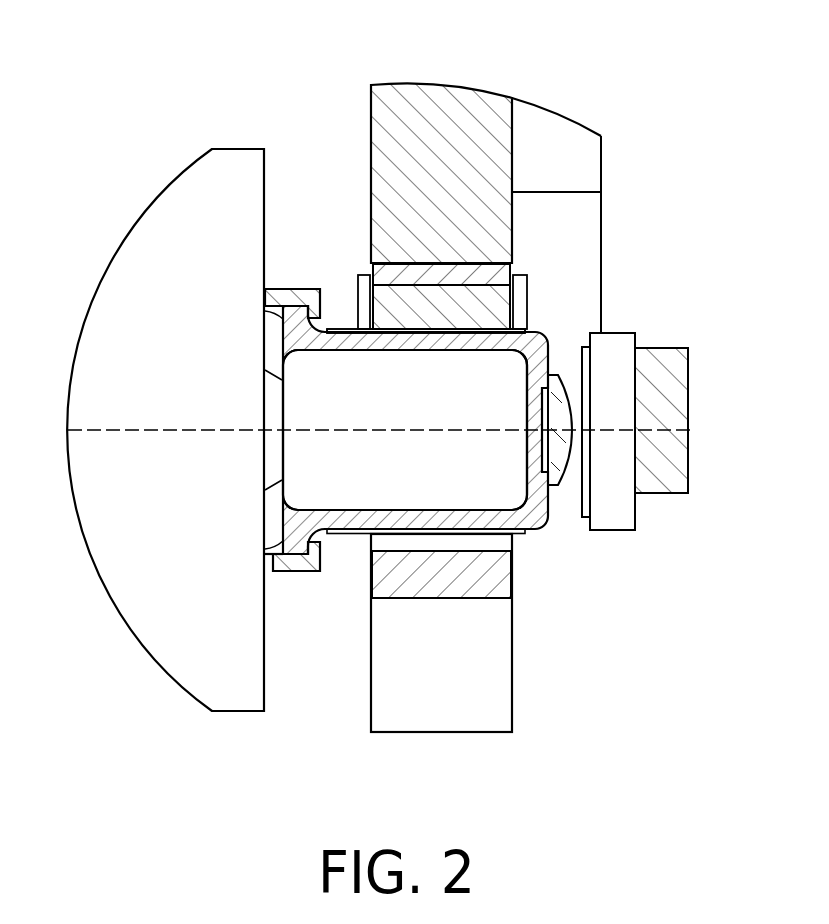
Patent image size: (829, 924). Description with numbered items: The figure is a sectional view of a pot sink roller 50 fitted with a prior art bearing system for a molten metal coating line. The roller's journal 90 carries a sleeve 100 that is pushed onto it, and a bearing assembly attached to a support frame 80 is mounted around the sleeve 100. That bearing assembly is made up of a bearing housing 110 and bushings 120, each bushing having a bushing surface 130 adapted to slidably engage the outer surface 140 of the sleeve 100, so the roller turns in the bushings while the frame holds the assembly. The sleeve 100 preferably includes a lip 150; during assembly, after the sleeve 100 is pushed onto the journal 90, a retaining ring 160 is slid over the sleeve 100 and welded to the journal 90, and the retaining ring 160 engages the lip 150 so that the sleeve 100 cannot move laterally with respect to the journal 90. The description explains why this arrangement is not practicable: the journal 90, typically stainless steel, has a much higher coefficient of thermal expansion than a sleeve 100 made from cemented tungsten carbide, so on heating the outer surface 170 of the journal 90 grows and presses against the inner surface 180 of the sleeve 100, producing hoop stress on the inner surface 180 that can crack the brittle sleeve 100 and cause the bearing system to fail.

The pot sink roller 50 is at (121, 500).
The support frame 80 is at (470, 105).
The journal 90 is at (355, 453).
The sleeve 100 is at (535, 362).
The bearing housing 110 is at (487, 577).
The bushings 120 is at (465, 305).
The bushing surface 130 is at (373, 279).
The outer surface of sleeve 140 is at (527, 330).
The lip 150 is at (288, 542).
The retaining ring 160 is at (282, 297).
The outer surface of journal 170 is at (470, 351).
The inner surface of sleeve 180 is at (477, 513).